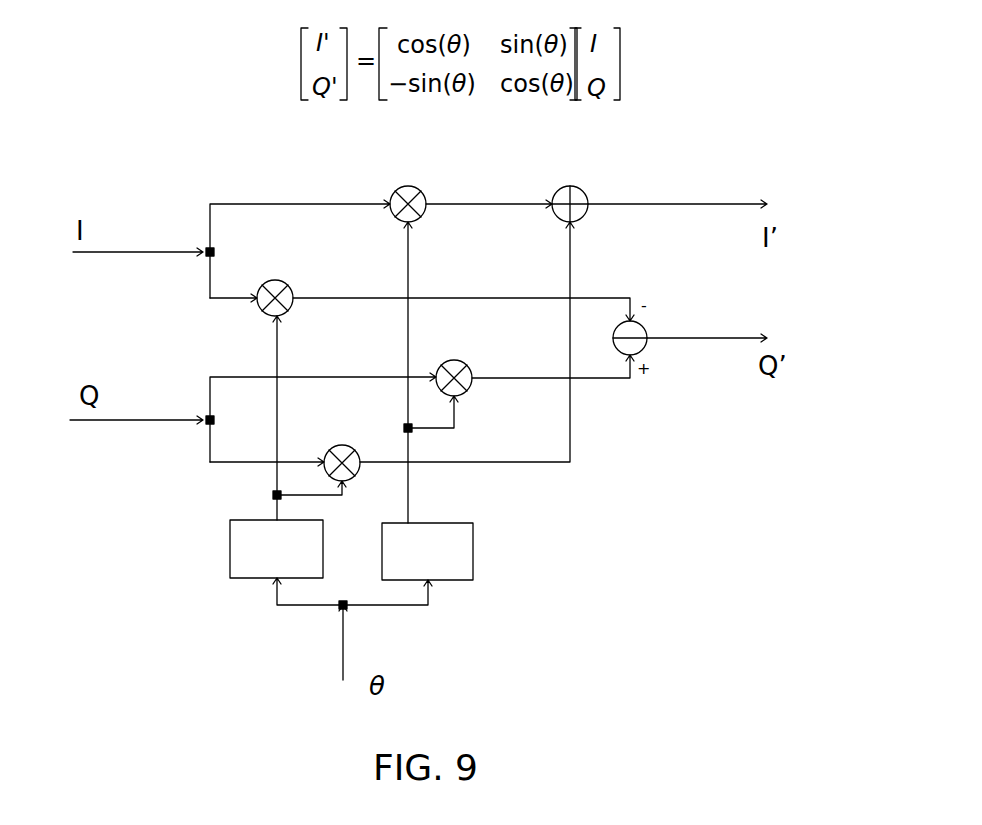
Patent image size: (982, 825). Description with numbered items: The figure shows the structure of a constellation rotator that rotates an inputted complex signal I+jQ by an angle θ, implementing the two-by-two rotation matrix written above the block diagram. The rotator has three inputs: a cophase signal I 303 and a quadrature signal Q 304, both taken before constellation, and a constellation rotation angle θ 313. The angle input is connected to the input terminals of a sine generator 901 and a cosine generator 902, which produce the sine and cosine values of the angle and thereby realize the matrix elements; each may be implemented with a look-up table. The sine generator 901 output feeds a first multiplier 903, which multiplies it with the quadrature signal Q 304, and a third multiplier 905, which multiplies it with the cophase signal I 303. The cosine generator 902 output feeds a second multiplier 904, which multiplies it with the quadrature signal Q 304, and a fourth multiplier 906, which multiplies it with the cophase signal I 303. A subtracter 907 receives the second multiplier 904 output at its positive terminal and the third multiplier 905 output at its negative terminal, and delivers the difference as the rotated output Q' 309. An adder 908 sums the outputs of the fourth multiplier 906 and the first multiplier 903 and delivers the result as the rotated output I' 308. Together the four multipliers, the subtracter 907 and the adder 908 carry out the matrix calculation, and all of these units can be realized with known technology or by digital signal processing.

The cophase signal I 303 is at (145, 250).
The quadrature signal Q 304 is at (135, 423).
The output I' 308 is at (737, 204).
The output Q' 309 is at (732, 339).
The constellation rotation angle θ 313 is at (343, 635).
The sine generator 901 is at (230, 548).
The cosine generator 902 is at (473, 550).
The first multiplier 903 is at (332, 445).
The second multiplier 904 is at (450, 360).
The third multiplier 905 is at (272, 280).
The fourth multiplier 906 is at (404, 186).
The subtracter 907 is at (639, 323).
The adder 908 is at (575, 187).